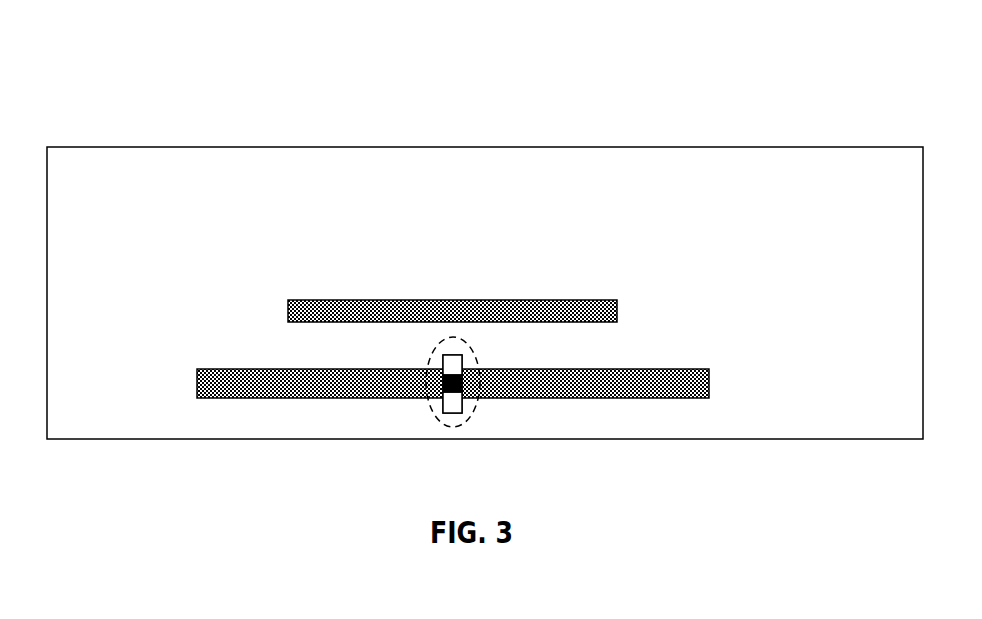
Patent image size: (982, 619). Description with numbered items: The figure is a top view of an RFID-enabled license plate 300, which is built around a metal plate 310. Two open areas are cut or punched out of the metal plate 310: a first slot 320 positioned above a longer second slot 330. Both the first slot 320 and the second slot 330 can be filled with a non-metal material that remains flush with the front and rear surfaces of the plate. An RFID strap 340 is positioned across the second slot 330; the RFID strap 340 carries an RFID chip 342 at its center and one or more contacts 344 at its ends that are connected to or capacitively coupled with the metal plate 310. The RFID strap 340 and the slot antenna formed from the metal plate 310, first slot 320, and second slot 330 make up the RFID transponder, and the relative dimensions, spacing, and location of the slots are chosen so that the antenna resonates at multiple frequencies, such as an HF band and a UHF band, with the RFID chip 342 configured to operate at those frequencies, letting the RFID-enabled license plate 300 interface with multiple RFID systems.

The RFID-enabled license plate 300 is at (148, 86).
The metal plate 310 is at (813, 147).
The first slot 320 is at (600, 299).
The second slot 330 is at (675, 368).
The RFID strap 340 is at (498, 411).
The RFID chip 342 is at (443, 378).
The contacts 344 is at (463, 358).